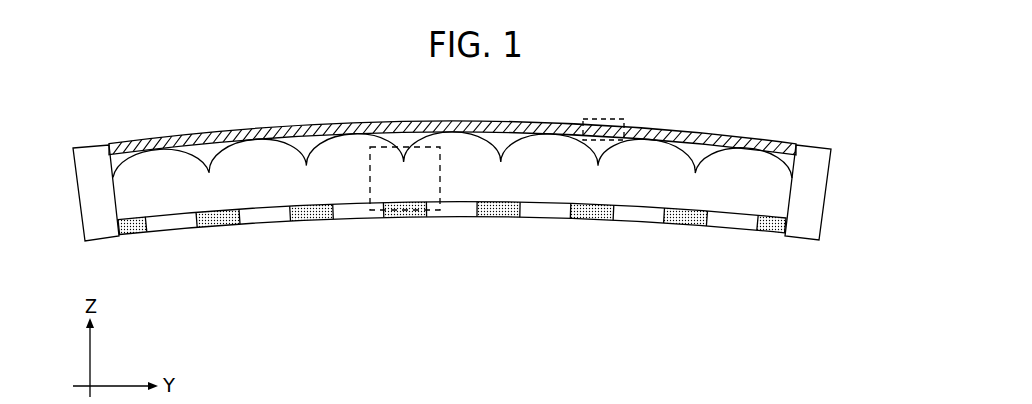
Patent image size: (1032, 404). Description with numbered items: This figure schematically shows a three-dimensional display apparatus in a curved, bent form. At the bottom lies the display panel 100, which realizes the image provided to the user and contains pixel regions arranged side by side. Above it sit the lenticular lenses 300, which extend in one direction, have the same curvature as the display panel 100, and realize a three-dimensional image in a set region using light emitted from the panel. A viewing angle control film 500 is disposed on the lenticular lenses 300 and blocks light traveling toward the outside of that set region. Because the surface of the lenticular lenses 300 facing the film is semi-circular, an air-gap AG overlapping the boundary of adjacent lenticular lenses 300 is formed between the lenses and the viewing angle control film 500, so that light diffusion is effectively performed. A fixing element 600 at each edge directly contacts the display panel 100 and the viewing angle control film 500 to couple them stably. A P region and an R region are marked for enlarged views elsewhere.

The display panel 100 is at (800, 230).
The lenticular lenses 300 is at (804, 191).
The viewing angle control film 500 is at (808, 151).
The fixing element 600 is at (102, 238).
The R region R is at (603, 118).
The P region P is at (375, 212).
The air-gap AG is at (696, 151).